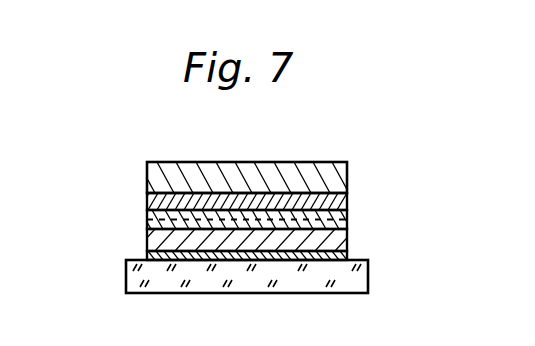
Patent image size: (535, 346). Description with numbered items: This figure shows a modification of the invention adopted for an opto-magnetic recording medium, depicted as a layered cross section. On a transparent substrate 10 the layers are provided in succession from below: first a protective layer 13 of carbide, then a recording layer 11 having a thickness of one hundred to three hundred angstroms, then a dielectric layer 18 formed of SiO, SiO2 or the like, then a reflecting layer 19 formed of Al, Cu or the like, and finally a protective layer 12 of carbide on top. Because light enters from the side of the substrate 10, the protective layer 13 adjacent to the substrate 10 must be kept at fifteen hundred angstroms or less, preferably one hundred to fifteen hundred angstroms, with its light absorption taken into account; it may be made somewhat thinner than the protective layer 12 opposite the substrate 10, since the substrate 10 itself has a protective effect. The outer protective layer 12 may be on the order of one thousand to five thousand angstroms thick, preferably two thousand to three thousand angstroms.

The transparent substrate 10 is at (360, 278).
The protective layer 13 is at (147, 253).
The recording layer 11 is at (347, 241).
The dielectric layer 18 is at (147, 215).
The reflecting layer 19 is at (347, 203).
The protective layer 12 is at (148, 176).